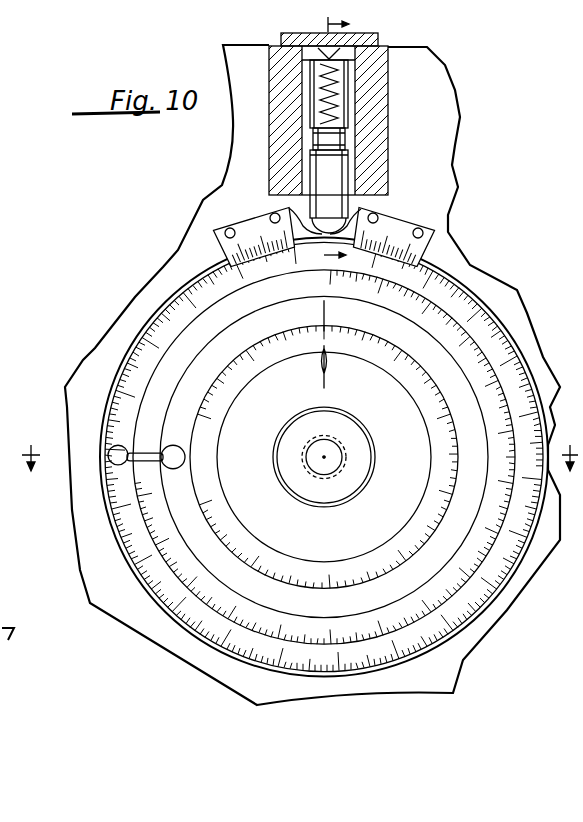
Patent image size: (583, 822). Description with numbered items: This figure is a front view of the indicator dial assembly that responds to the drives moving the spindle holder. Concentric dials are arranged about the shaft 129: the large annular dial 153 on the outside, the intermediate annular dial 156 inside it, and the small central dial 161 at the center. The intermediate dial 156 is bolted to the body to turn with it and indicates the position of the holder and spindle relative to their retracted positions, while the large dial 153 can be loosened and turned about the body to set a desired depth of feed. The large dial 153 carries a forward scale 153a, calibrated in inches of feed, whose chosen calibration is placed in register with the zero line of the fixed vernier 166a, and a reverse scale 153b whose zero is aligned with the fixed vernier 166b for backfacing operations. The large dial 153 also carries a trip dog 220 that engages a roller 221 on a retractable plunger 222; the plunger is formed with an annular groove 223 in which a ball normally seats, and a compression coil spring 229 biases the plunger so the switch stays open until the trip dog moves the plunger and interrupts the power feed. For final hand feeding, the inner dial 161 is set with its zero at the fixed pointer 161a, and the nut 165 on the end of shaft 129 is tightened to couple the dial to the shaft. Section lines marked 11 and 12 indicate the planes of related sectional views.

The compression coil spring 229 is at (367, 42).
The cut away annular groove 223 is at (343, 140).
The retractable plunger 222 is at (338, 182).
The roller 221 is at (290, 209).
The trip dog 220 is at (366, 212).
The fixed vernier 166a is at (227, 225).
The fixed vernier 166b is at (400, 227).
The large annular dial 153 is at (324, 456).
The reverse scale 153b is at (331, 457).
The intermediate annular dial 156 is at (354, 457).
The small central dial 161 is at (385, 457).
The fixed pointer 161a is at (294, 344).
The shaft 129 is at (327, 428).
The nut 165 is at (341, 457).
The forward scale 153a is at (104, 398).
The section line 12- 12 is at (326, 135).
The section line 11- 11 is at (299, 468).